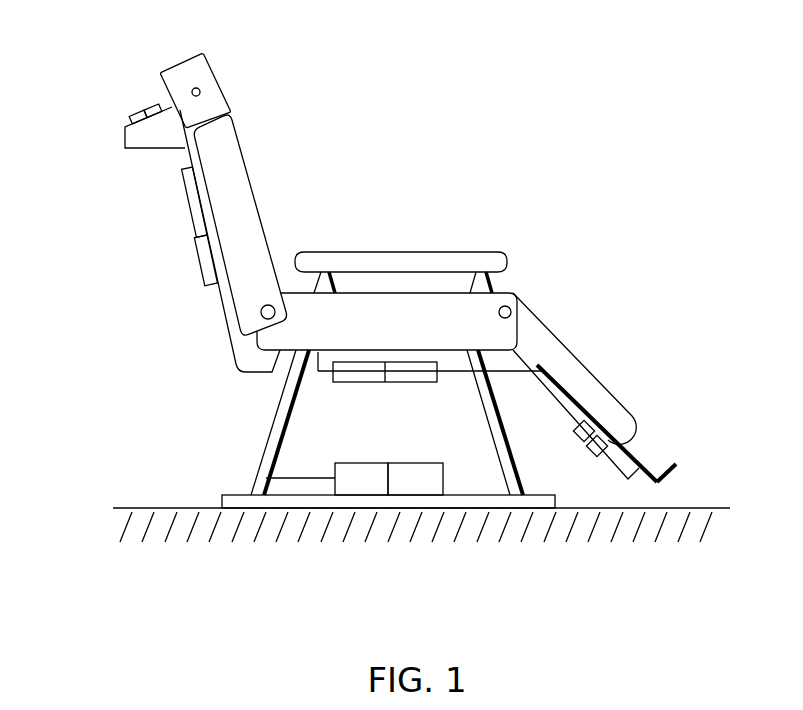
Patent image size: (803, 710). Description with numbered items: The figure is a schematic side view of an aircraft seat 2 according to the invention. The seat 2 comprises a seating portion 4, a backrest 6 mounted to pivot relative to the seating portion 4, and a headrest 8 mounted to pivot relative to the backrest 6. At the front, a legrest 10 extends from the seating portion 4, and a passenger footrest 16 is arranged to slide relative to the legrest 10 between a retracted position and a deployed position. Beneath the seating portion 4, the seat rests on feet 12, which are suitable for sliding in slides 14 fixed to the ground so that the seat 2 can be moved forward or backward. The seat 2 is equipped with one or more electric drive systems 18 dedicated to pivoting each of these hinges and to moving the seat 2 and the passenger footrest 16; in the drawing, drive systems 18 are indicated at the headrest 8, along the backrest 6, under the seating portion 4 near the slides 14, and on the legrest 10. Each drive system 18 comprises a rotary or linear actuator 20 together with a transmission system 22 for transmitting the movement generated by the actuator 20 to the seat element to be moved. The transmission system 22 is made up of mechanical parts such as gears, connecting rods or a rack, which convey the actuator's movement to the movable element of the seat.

The aircraft seat 2 is at (101, 574).
The seating portion 4 is at (377, 333).
The backrest 6 is at (235, 188).
The headrest 8 is at (212, 104).
The legrest 10 is at (562, 363).
The feet 12 is at (270, 445).
The slides 14 is at (556, 510).
The passenger footrest 16 is at (677, 476).
The electric drive system 18 is at (122, 86).
The actuator 20 is at (205, 253).
The transmission system 22 is at (192, 209).